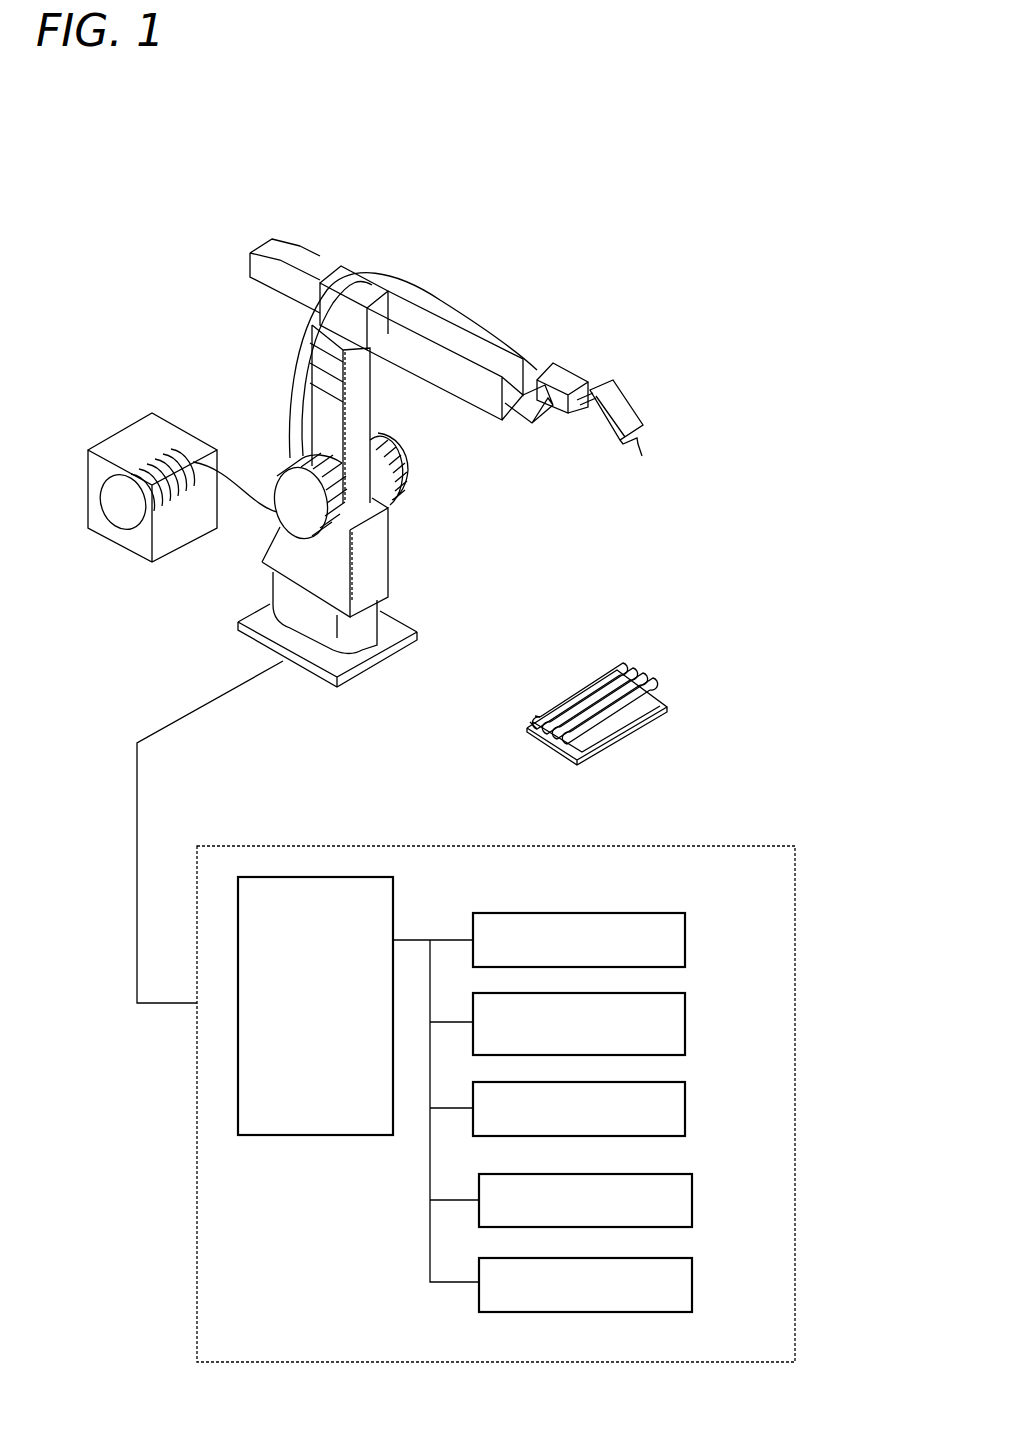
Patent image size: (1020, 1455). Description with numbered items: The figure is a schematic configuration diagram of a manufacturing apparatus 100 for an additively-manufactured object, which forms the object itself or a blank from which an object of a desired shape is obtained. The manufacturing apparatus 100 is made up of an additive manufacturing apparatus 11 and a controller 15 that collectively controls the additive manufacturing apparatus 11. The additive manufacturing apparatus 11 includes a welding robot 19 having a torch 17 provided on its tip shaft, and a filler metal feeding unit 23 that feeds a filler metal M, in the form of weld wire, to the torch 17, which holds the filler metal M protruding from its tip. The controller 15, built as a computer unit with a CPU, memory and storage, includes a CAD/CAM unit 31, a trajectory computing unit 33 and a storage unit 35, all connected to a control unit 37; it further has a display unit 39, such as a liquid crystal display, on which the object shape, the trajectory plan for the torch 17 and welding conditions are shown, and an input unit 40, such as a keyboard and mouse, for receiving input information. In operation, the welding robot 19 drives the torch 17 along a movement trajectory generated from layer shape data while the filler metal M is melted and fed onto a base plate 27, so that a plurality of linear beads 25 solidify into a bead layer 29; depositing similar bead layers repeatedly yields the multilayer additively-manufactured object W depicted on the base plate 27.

The manufacturing apparatus 100 is at (586, 300).
The additive manufacturing apparatus 11 is at (228, 221).
The welding robot 19 is at (277, 268).
The filler metal M is at (420, 290).
The torch 17 is at (620, 442).
The filler metal feeding unit 23 is at (152, 413).
The additively-manufactured object W is at (568, 669).
The linear beads 25 is at (643, 678).
The base plate 27 is at (553, 741).
The bead layer 29 is at (525, 719).
The controller 15 is at (756, 834).
The control unit 37 is at (393, 893).
The CAD/CAM unit 31 is at (686, 940).
The trajectory computing unit 33 is at (686, 1018).
The storage unit 35 is at (686, 1108).
The display unit 39 is at (692, 1199).
The input unit 40 is at (692, 1282).